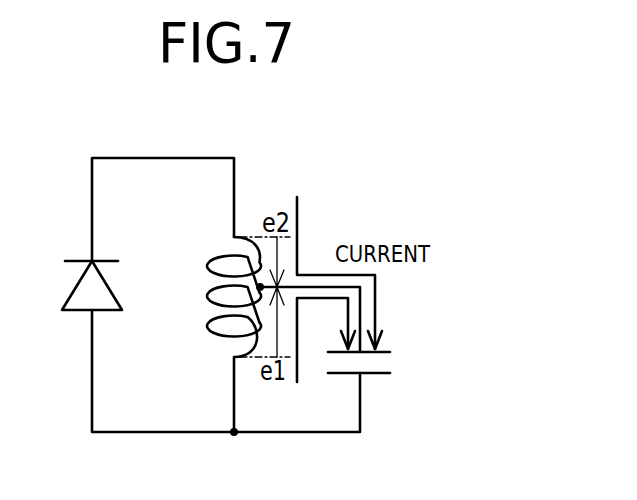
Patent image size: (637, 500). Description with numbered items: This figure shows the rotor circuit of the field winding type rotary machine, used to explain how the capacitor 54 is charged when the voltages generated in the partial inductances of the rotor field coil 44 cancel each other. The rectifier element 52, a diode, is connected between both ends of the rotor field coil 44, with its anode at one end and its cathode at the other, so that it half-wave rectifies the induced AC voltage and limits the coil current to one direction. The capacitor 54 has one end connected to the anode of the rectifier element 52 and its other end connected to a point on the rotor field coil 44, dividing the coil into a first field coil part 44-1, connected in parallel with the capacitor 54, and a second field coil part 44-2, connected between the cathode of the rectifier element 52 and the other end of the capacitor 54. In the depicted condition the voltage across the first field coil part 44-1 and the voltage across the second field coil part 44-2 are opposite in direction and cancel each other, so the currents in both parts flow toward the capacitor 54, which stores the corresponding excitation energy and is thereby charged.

The rotor field coil 44 is at (307, 257).
The first field coil part 44-1 is at (207, 330).
The second field coil part 44-2 is at (223, 257).
The rectifier element 52 is at (73, 310).
The capacitor 54 is at (382, 375).